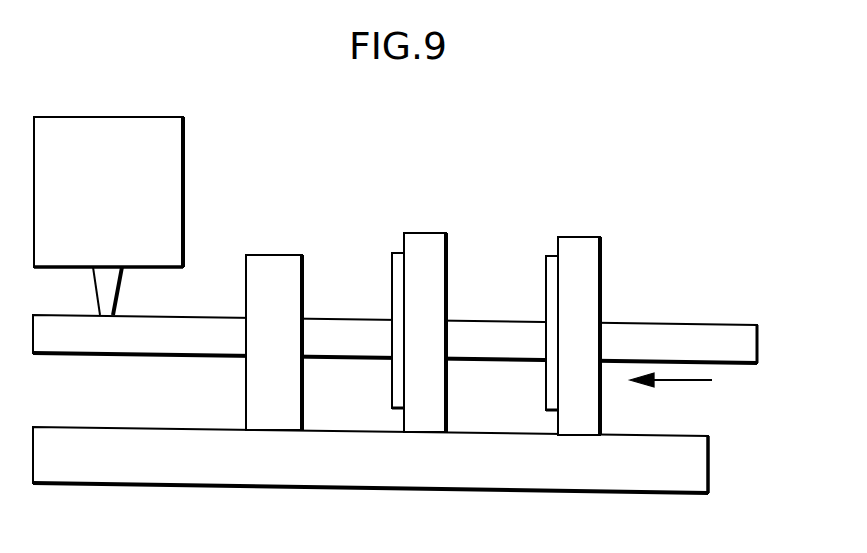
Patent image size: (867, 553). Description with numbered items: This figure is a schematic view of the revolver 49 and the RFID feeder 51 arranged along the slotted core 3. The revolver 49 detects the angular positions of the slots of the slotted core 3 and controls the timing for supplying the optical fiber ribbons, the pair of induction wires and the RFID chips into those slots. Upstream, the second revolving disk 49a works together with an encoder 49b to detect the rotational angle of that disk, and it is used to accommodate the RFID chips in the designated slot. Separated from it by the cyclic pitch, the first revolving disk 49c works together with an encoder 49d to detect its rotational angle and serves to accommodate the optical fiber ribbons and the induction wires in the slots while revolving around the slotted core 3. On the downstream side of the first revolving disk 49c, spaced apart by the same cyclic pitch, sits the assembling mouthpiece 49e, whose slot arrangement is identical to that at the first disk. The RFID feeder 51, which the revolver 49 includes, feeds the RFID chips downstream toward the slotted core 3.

The slotted core 3 is at (713, 325).
The revolver 49 is at (427, 270).
The second revolving disk 49a is at (551, 256).
The encoder 49b is at (582, 301).
The first revolving disk 49c is at (398, 253).
The encoder 49d is at (426, 233).
The assembling mouthpiece 49e is at (271, 255).
The RFID feeder 51 is at (106, 117).